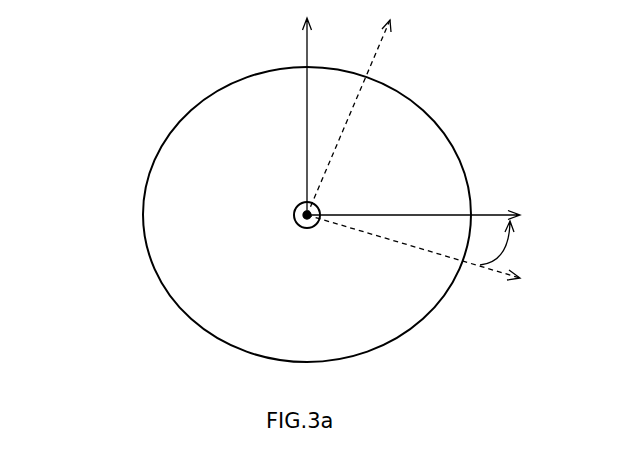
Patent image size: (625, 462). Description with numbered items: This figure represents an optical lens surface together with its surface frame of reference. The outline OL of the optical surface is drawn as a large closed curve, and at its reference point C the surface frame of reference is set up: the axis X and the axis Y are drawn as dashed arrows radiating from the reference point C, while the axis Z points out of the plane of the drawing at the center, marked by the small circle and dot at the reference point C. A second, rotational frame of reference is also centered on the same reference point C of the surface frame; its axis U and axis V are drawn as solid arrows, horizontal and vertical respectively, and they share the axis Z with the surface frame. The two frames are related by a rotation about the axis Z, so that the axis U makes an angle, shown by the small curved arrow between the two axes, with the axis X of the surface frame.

The outline of eye lens OL is at (172, 127).
The reference point C is at (307, 202).
The Z axis Z is at (293, 229).
The V axis V is at (293, 116).
The U axis U is at (413, 207).
The X axis X is at (413, 257).
The Y axis Y is at (356, 114).